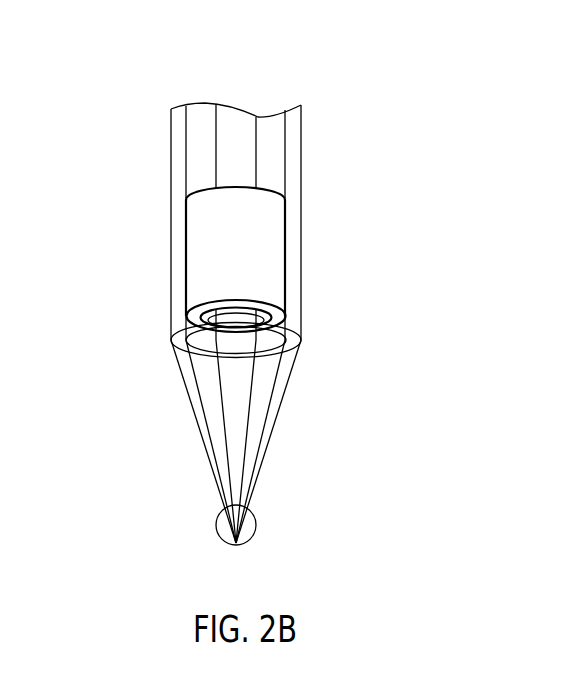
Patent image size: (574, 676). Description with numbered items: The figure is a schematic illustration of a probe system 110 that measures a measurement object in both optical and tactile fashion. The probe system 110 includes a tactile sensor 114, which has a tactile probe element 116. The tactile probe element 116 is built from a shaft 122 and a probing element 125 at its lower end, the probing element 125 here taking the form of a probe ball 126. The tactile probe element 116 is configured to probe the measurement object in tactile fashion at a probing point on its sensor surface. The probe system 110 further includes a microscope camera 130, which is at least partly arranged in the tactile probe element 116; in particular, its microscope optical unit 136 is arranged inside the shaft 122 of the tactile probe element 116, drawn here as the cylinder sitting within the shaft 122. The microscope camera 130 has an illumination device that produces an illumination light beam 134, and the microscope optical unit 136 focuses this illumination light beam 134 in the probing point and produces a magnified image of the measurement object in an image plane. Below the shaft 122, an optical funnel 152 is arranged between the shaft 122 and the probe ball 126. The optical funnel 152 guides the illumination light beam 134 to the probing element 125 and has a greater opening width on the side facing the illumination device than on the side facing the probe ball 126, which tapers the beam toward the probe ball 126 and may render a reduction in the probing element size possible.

The probe system 110 is at (315, 189).
The tactile sensor 114 is at (338, 172).
The tactile probe element 116 is at (242, 324).
The shaft 122 is at (178, 152).
The microscope camera 130 is at (306, 259).
The microscope optical unit 136 is at (266, 258).
The illumination light beam 134 is at (238, 402).
The optical funnel 152 is at (198, 400).
The probing element 125 is at (339, 525).
The probe ball 126 is at (252, 525).